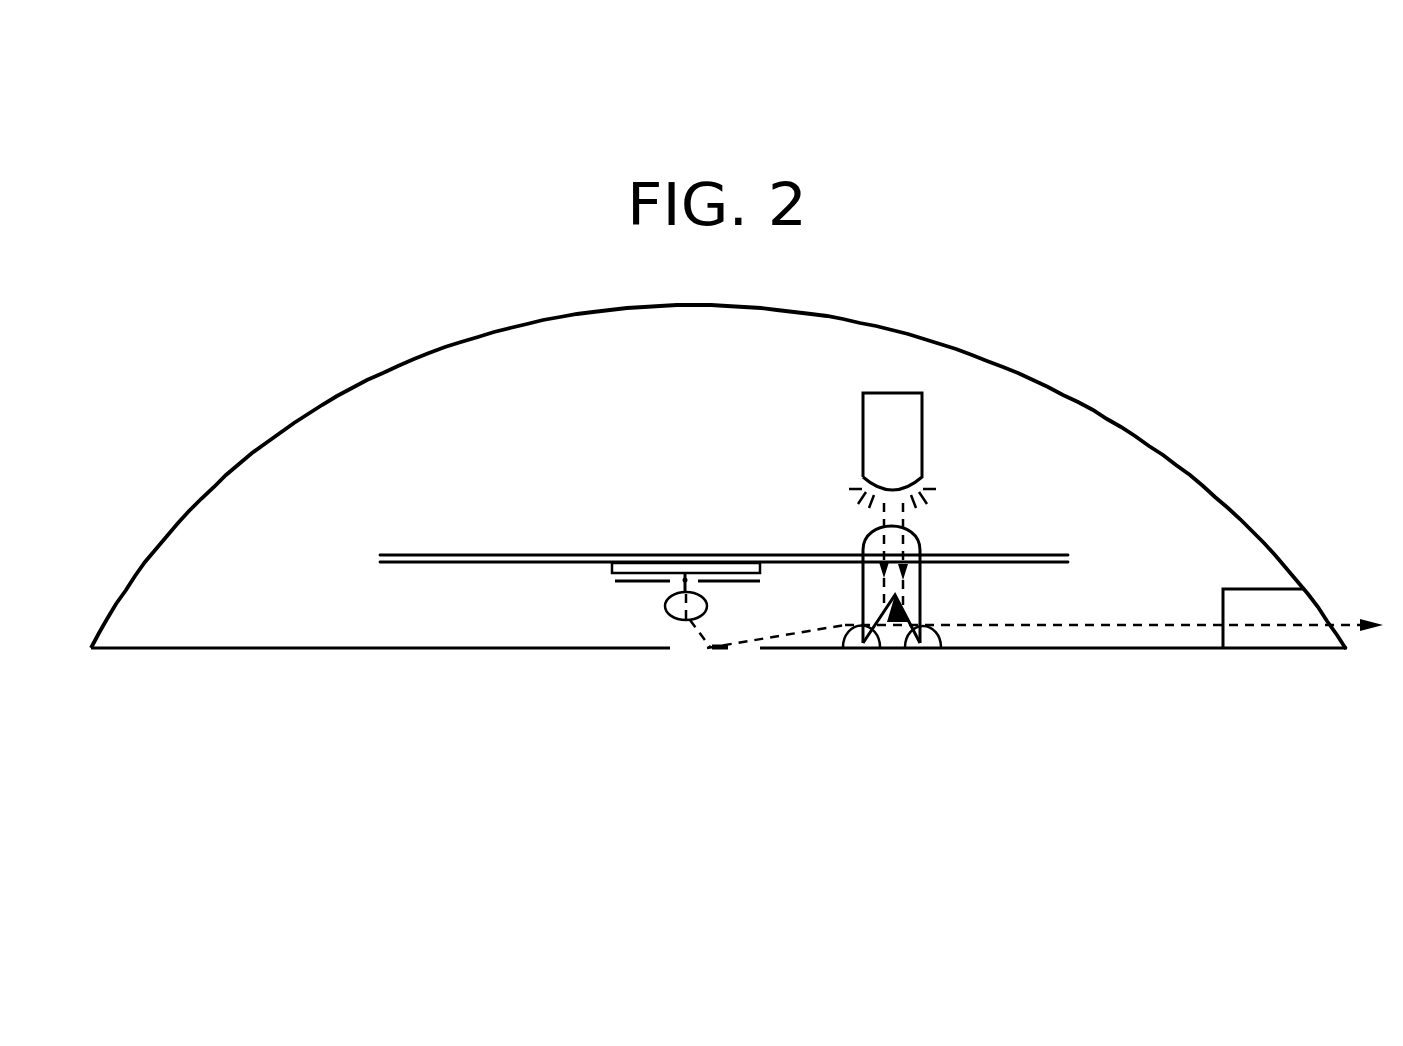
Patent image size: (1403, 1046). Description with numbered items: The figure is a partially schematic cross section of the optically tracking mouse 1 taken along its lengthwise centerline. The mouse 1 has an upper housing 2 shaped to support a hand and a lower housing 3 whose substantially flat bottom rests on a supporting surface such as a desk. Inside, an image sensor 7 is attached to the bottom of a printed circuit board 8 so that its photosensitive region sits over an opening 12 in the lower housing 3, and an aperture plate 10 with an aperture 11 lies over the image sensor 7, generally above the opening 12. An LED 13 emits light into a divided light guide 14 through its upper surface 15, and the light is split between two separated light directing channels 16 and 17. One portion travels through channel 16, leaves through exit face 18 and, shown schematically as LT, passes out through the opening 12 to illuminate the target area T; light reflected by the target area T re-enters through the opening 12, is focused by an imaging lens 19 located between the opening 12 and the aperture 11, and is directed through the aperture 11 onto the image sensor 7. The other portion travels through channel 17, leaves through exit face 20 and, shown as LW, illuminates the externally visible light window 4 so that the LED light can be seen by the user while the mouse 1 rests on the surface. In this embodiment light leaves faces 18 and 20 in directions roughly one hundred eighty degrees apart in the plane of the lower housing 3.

The mouse 1 is at (262, 386).
The upper housing 2 is at (760, 307).
The lower housing 3 is at (195, 649).
The light window 4 is at (1298, 603).
The image sensor 7 is at (610, 567).
The printed circuit board 8 is at (395, 557).
The aperture plate 10 is at (617, 580).
The aperture 11 is at (672, 588).
The opening 12 is at (675, 652).
The LED 13 is at (922, 442).
The divided light guide 14 is at (925, 549).
The upper surface 15 is at (905, 527).
The light directing channel 16 is at (878, 650).
The light directing channel 17 is at (913, 617).
The exit face 18 is at (855, 650).
The imaging lens 19 is at (707, 606).
The exit face 20 is at (925, 650).
The target area T is at (724, 659).
The target illumination light LT is at (742, 650).
The window illumination light LW is at (1132, 624).